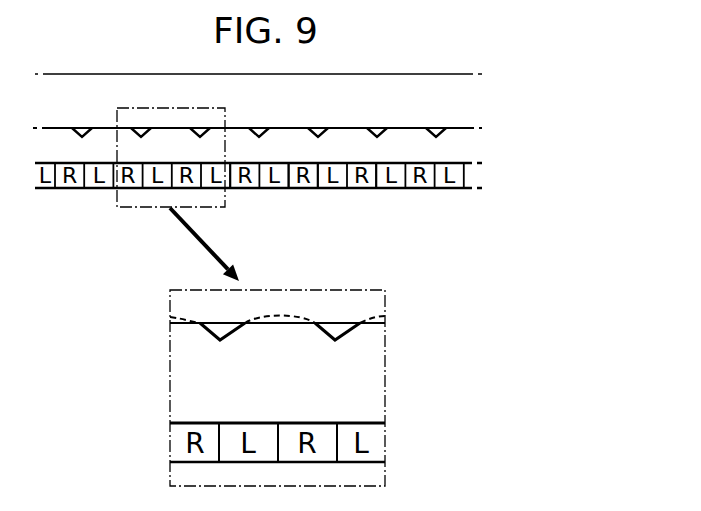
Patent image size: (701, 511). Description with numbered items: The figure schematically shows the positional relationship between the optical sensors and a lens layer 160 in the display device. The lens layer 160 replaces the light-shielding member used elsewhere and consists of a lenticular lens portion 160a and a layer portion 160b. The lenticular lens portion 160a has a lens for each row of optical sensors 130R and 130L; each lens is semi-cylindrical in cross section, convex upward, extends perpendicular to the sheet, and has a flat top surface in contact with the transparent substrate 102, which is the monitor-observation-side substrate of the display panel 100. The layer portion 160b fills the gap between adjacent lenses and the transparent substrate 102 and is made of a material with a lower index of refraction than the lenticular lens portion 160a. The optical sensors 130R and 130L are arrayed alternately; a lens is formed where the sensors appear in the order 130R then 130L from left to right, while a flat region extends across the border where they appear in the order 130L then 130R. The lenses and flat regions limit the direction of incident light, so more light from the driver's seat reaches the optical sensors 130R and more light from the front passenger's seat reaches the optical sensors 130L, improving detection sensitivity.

The display panel 100 is at (603, 73).
The transparent substrate 102 is at (398, 75).
The optical sensors 130R is at (292, 191).
The optical sensors 130L is at (390, 191).
The lens layer 160 is at (320, 223).
The lenticular lens portion 160a is at (422, 133).
The layer portion 160b is at (441, 128).